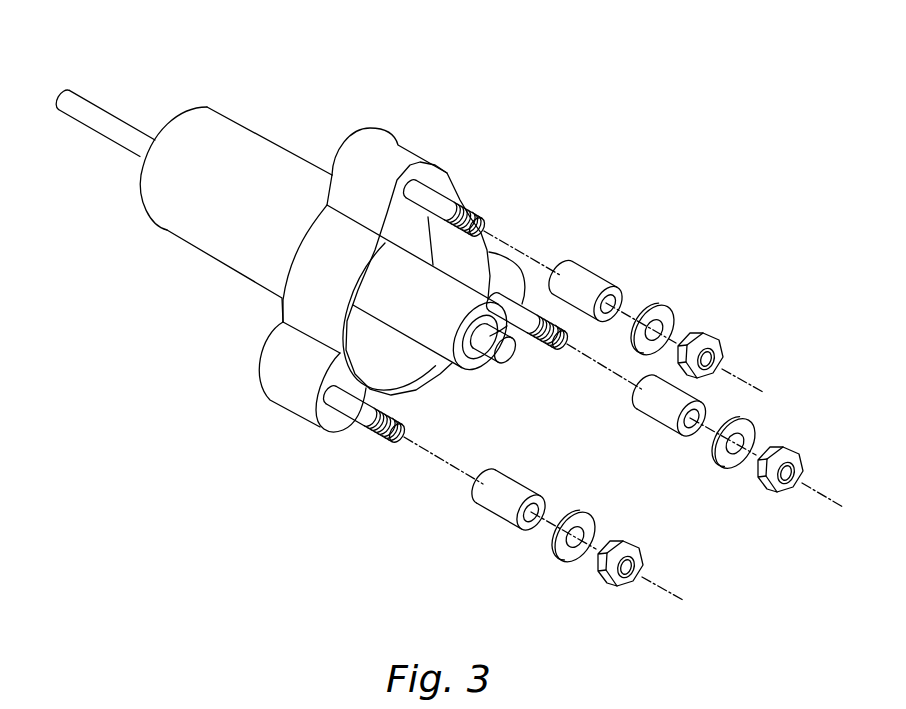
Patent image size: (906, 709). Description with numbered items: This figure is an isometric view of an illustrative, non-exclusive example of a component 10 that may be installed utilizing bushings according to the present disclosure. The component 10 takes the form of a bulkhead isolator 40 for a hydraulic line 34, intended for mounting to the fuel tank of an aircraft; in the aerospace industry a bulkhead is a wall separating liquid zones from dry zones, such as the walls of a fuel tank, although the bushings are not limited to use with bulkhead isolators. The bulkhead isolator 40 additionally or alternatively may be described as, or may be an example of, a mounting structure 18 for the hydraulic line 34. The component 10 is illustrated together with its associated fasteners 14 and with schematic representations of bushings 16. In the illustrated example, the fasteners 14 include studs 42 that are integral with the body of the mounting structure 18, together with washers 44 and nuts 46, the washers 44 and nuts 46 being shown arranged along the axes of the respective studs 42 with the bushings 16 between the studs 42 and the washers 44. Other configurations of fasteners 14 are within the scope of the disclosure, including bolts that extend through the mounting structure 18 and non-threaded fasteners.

The component 10 is at (266, 56).
The fasteners 14 is at (547, 163).
The bushings 16 is at (591, 271).
The mounting structure 18 is at (397, 140).
The hydraulic line 34 is at (113, 113).
The bulkhead isolator 40 is at (333, 93).
The studs 42 is at (452, 183).
The washers 44 is at (656, 304).
The nuts 46 is at (712, 335).